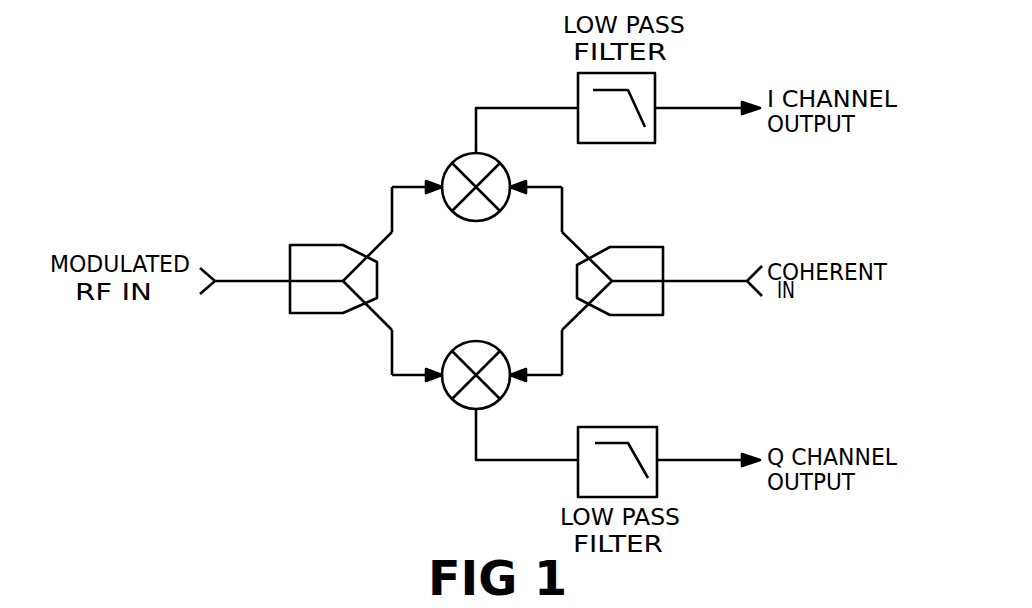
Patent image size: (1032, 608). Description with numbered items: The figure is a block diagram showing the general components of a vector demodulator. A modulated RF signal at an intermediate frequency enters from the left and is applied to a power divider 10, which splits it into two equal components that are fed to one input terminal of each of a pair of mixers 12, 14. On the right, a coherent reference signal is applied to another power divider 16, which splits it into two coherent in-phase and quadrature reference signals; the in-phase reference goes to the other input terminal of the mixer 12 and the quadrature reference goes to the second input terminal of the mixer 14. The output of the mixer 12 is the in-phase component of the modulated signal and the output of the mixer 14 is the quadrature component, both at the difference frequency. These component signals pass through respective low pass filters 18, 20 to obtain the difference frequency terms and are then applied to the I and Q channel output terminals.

The power divider 10 is at (335, 245).
The mixer 12 is at (458, 152).
The mixer 14 is at (475, 340).
The power divider 16 is at (630, 247).
The low pass filter 18 is at (655, 123).
The low pass filter 20 is at (657, 440).